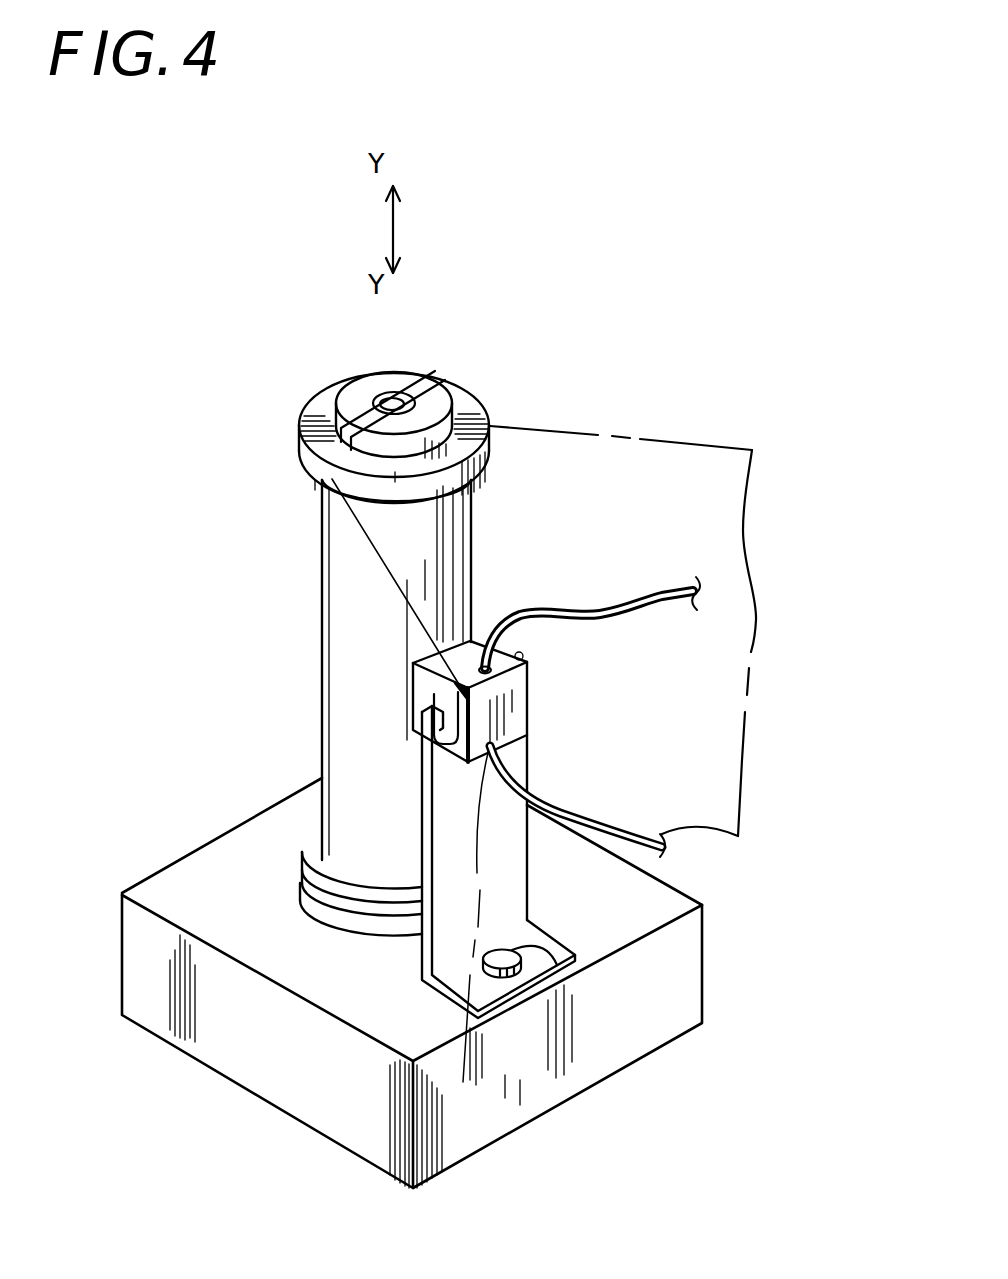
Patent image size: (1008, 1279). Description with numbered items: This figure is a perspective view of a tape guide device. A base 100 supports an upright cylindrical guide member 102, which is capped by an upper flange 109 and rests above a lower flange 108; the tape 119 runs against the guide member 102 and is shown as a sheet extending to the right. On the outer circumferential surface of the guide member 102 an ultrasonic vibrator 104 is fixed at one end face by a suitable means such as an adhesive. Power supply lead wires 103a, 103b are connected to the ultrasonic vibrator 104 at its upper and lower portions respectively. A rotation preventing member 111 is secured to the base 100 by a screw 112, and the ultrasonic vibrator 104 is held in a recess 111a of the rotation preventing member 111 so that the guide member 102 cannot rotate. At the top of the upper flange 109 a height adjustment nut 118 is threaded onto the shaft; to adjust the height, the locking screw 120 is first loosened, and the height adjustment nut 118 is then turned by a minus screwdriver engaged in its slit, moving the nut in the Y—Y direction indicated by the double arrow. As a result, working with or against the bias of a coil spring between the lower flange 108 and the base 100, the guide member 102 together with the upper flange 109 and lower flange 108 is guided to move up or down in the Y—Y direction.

The base 100 is at (198, 1062).
The guide member 102 is at (323, 500).
The power supply lead wire 103a is at (653, 607).
The power supply lead wire 103b is at (665, 850).
The ultrasonic vibrator 104 is at (513, 698).
The lower flange 108 is at (463, 1081).
The upper flange 109 is at (314, 389).
The rotation preventing member 111 is at (530, 848).
The recess 111a is at (457, 690).
The screw 112 is at (560, 968).
The height adjustment nut 118 is at (437, 395).
The tape 119 is at (640, 435).
The locking screw 120 is at (397, 397).